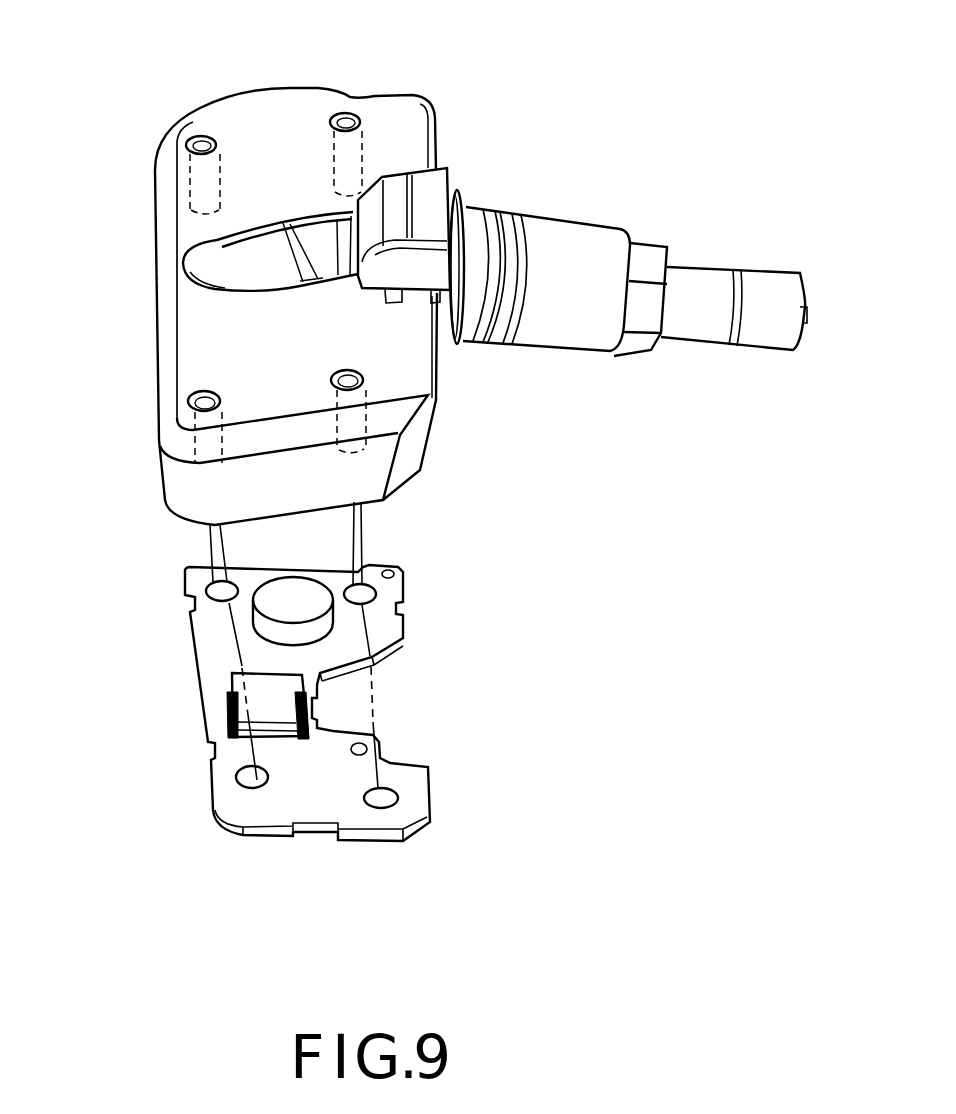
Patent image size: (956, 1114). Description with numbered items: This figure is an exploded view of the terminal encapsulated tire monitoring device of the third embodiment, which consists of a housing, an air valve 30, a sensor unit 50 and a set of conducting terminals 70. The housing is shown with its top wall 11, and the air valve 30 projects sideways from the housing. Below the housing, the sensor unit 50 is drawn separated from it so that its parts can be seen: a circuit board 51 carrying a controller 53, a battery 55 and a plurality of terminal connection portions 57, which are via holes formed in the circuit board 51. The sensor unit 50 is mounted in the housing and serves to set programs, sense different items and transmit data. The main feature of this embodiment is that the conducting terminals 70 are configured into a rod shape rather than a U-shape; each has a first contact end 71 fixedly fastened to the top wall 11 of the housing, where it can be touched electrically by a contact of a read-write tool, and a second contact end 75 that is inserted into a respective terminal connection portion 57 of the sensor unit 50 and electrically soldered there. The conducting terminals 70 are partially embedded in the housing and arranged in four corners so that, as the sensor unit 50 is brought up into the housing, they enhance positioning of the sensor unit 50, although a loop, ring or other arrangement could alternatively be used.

The top wall 11 is at (254, 271).
The air valve 30 is at (592, 217).
The sensor unit 50 is at (298, 728).
The circuit board 51 is at (267, 812).
The controller 53 is at (231, 701).
The battery 55 is at (298, 590).
The terminal connection portions 57 is at (247, 775).
The conducting terminals 70 is at (201, 136).
The first contact end 71 is at (188, 407).
The second contact end 75 is at (205, 468).